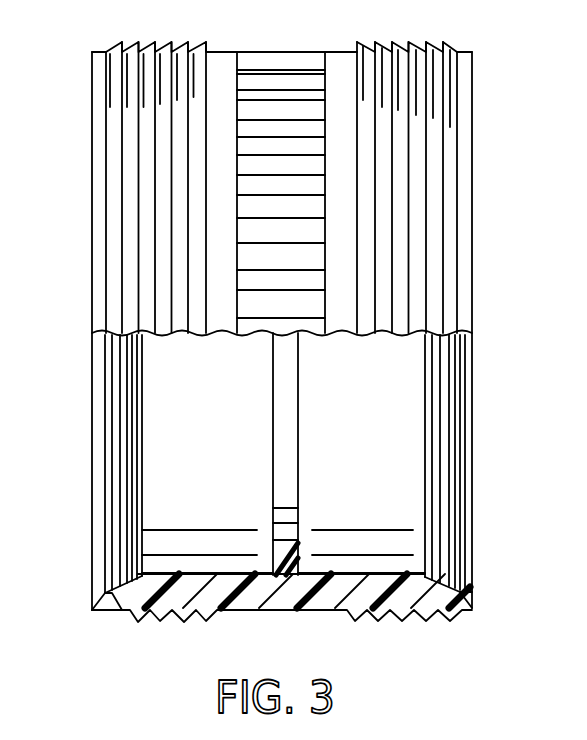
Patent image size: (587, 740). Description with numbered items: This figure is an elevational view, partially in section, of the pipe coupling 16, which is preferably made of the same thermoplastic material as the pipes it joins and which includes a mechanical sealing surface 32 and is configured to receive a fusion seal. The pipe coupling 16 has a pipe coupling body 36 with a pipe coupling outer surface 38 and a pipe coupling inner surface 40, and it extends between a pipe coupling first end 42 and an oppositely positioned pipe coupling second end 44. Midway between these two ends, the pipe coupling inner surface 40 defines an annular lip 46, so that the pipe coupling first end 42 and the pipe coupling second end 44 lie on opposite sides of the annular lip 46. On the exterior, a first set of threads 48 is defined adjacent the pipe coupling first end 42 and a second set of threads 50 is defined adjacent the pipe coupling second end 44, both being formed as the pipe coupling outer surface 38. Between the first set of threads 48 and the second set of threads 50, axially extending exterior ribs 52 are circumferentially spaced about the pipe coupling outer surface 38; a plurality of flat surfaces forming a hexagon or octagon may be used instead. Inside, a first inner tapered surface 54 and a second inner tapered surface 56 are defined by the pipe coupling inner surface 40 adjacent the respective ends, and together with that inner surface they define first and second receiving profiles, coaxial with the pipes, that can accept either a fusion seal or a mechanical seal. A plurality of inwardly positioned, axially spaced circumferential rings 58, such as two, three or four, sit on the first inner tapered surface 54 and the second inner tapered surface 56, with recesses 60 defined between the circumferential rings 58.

The pipe coupling 16 is at (85, 182).
The mechanical sealing surface 32 is at (115, 590).
The pipe coupling body 36 is at (472, 192).
The pipe coupling outer surface 38 is at (460, 52).
The pipe coupling inner surface 40 is at (192, 575).
The pipe coupling first end 42 is at (473, 603).
The pipe coupling second end 44 is at (100, 610).
The annular lip 46 is at (297, 575).
The first set of threads 48 is at (393, 620).
The second set of threads 50 is at (125, 620).
The exterior ribs 52 is at (256, 57).
The first inner tapered surface 54 is at (447, 570).
The second inner tapered surface 56 is at (100, 610).
The circumferential rings 58 is at (105, 436).
The recesses 60 is at (123, 582).